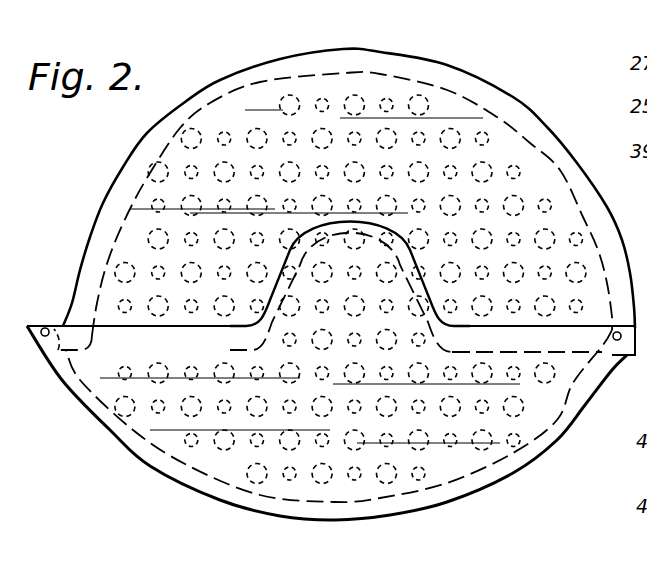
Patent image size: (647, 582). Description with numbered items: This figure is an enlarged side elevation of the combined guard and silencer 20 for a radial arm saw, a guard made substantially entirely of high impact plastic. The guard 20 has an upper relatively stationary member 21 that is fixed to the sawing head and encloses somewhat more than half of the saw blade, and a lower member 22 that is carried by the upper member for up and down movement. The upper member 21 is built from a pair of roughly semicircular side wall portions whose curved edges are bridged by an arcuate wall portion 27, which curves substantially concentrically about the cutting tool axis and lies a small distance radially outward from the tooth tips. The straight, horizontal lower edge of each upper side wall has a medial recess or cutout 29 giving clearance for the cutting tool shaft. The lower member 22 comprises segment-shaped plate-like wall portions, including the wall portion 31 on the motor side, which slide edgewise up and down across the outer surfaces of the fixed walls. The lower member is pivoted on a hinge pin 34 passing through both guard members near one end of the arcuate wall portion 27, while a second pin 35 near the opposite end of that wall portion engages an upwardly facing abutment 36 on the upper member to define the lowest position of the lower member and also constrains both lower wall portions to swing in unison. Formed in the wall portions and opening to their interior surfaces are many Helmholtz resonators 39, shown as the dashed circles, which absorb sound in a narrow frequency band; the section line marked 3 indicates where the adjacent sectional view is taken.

The section line 3- 3 is at (332, 15).
The combined guard and silencer 20 is at (220, 76).
The upper relatively stationary member 21 is at (540, 136).
The lower member 22 is at (453, 505).
The arcuate wall portion 27 is at (448, 82).
The medial recess or cutout 29 is at (310, 250).
The segment-shaped plate-like wall portion 31 is at (384, 250).
The hinge pin 34 is at (617, 342).
The pin 35 is at (63, 310).
The upwardly facing abutment 36 is at (36, 352).
The Helmholtz resonators 39 is at (288, 92).